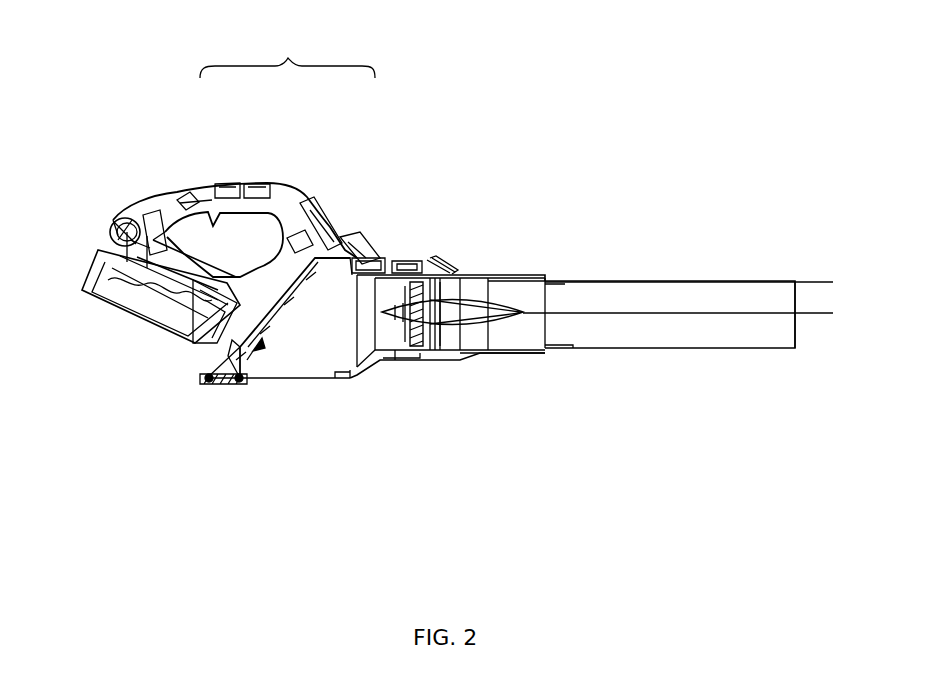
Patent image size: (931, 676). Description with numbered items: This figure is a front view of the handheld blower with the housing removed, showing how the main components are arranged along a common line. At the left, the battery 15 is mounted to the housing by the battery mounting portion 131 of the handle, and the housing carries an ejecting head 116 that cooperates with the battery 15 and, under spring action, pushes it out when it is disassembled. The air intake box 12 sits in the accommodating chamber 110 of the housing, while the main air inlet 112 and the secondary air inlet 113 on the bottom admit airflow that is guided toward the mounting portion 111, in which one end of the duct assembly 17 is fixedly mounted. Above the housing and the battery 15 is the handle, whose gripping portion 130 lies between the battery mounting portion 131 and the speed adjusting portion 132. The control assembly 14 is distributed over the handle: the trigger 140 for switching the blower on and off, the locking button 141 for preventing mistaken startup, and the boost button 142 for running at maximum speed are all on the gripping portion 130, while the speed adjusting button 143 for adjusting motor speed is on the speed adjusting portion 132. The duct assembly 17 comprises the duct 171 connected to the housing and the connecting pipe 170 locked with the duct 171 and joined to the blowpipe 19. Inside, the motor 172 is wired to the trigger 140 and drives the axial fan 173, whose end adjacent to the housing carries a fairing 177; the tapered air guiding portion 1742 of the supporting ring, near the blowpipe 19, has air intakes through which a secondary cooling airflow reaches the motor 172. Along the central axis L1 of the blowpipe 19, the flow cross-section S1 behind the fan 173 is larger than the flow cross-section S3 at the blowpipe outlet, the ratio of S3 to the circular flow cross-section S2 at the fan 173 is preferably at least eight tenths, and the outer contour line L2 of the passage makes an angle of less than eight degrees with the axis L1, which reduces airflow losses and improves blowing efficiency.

The air intake box 12 is at (237, 380).
The control assembly 14 is at (287, 50).
The battery 15 is at (140, 320).
The duct assembly 17 is at (488, 262).
The blowpipe 19 is at (760, 293).
The accommodating chamber 110 is at (297, 347).
The mounting portion 111 is at (337, 312).
The main air inlet 112 is at (297, 380).
The secondary air inlet 113 is at (206, 378).
The ejecting head 116 is at (190, 340).
The gripping portion 130 is at (170, 200).
The battery mounting portion 131 is at (113, 220).
The speed adjusting portion 132 is at (348, 238).
The trigger 140 is at (220, 213).
The locking button 141 is at (184, 200).
The boost button 142 is at (250, 185).
The speed adjusting button 143 is at (340, 217).
The connecting pipe 170 is at (507, 273).
The duct 171 is at (383, 330).
The motor 172 is at (487, 318).
The fan 173 is at (447, 317).
The fairing 177 is at (398, 340).
The air guiding portion 1742 is at (470, 337).
The flow cross-section S1 is at (395, 362).
The flow cross-section S2 is at (440, 268).
The flow cross-section S3 is at (797, 327).
The central axis L1 is at (693, 312).
The outer contour line L2 is at (704, 276).